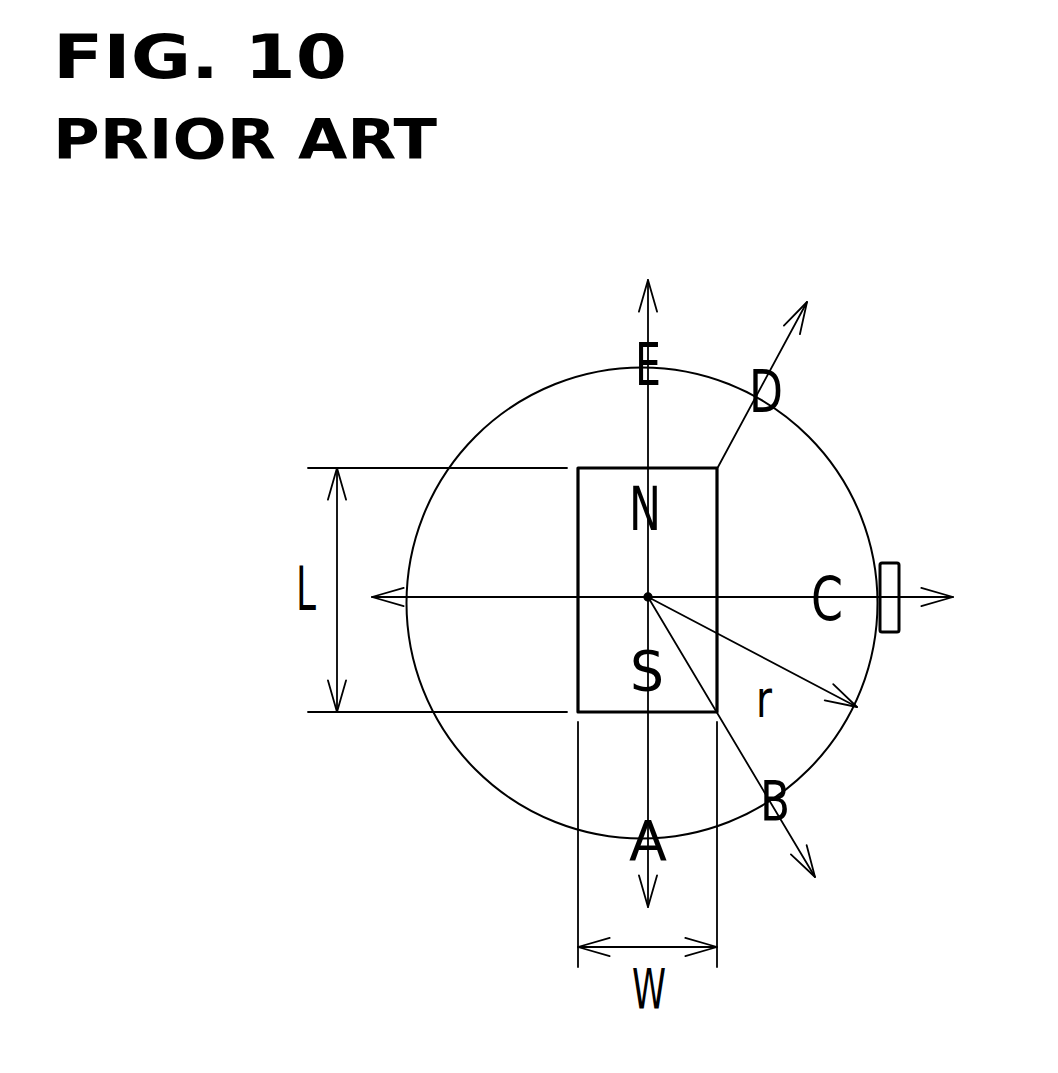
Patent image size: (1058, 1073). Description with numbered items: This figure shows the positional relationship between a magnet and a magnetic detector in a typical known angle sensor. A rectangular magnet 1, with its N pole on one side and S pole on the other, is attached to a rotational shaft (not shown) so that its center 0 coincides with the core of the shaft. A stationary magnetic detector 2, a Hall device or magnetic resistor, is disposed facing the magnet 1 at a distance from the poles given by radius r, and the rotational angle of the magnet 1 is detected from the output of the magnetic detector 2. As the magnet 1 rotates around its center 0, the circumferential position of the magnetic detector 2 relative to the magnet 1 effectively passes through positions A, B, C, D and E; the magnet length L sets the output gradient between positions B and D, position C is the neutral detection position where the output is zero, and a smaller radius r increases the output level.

The center 0 is at (650, 594).
The magnet 1 is at (597, 532).
The magnetic detector 2 is at (883, 560).